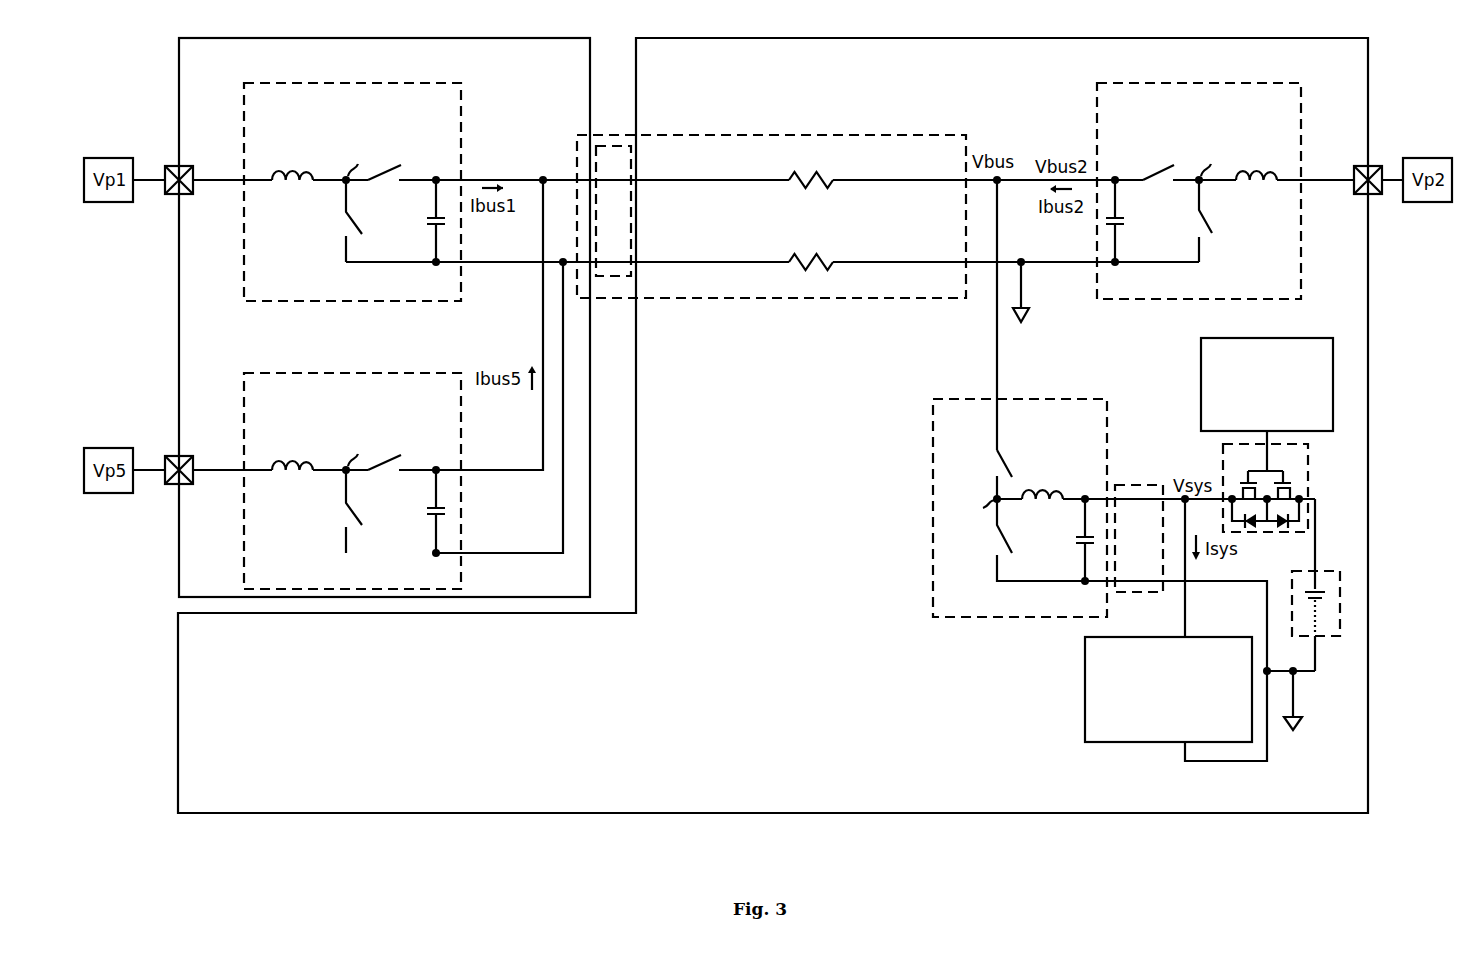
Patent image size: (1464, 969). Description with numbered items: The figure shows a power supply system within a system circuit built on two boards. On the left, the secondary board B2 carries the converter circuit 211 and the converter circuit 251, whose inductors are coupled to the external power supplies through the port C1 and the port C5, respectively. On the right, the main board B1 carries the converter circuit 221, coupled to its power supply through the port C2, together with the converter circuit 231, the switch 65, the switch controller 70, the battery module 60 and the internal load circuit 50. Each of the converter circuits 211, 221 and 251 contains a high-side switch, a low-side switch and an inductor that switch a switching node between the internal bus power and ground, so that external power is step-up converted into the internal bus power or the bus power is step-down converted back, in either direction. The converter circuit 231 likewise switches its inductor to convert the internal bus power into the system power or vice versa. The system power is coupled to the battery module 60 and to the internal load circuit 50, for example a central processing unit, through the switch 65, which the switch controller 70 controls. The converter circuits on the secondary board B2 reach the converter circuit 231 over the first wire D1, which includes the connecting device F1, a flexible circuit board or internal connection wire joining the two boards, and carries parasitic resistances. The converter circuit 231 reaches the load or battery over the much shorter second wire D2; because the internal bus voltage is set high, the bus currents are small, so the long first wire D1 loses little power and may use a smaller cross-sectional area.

The main board B1 is at (1312, 38).
The secondary board B2 is at (535, 38).
The port C1 is at (165, 167).
The port C2 is at (1373, 165).
The port C5 is at (165, 457).
The converter circuit 211 is at (397, 82).
The converter circuit 251 is at (397, 372).
The converter circuit 221 is at (1240, 82).
The converter circuit 231 is at (1073, 399).
The first wire D1 is at (933, 135).
The connecting device F1 is at (624, 170).
The second wire D2 is at (1128, 485).
The switch controller 70 is at (1256, 420).
The switch 65 is at (1304, 465).
The battery module 60 is at (1312, 573).
The internal load circuit 50 is at (1157, 727).